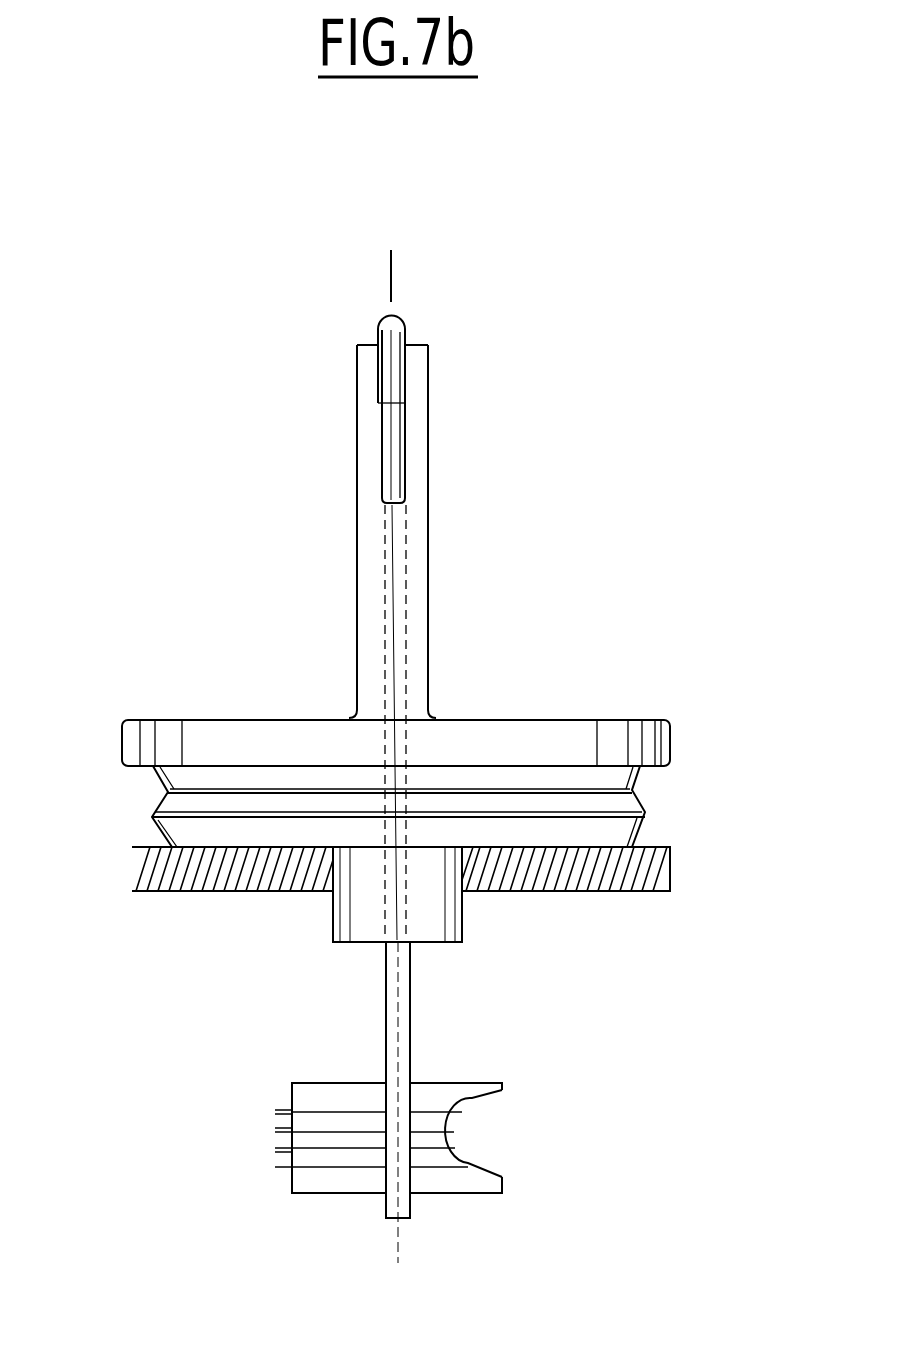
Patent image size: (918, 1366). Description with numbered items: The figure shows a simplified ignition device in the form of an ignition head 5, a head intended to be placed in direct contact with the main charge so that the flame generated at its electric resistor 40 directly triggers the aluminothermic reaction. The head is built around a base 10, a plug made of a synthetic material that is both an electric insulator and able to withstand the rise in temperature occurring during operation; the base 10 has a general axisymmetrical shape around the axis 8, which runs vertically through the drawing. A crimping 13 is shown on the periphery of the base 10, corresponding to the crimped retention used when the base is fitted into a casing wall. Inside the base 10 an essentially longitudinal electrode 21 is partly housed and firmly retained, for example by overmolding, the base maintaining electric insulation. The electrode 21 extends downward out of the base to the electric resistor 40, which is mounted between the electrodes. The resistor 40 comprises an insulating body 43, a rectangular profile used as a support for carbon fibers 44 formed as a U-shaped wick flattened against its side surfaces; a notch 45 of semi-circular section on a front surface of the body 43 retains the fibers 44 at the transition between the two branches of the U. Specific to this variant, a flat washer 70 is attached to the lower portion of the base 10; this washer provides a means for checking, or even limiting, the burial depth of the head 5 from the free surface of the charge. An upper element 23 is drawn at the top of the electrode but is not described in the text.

The axis 8 is at (393, 272).
The pin 23 is at (405, 337).
The electrode 21 is at (403, 535).
The base 10 is at (605, 728).
The ignition head 5 is at (100, 742).
The crimping 13 is at (645, 800).
The flat washer 70 is at (132, 862).
The electric resistor 40 is at (348, 1135).
The insulating body 43 is at (494, 1095).
The carbon fibers 44 is at (342, 1168).
The notch 45 is at (485, 1132).